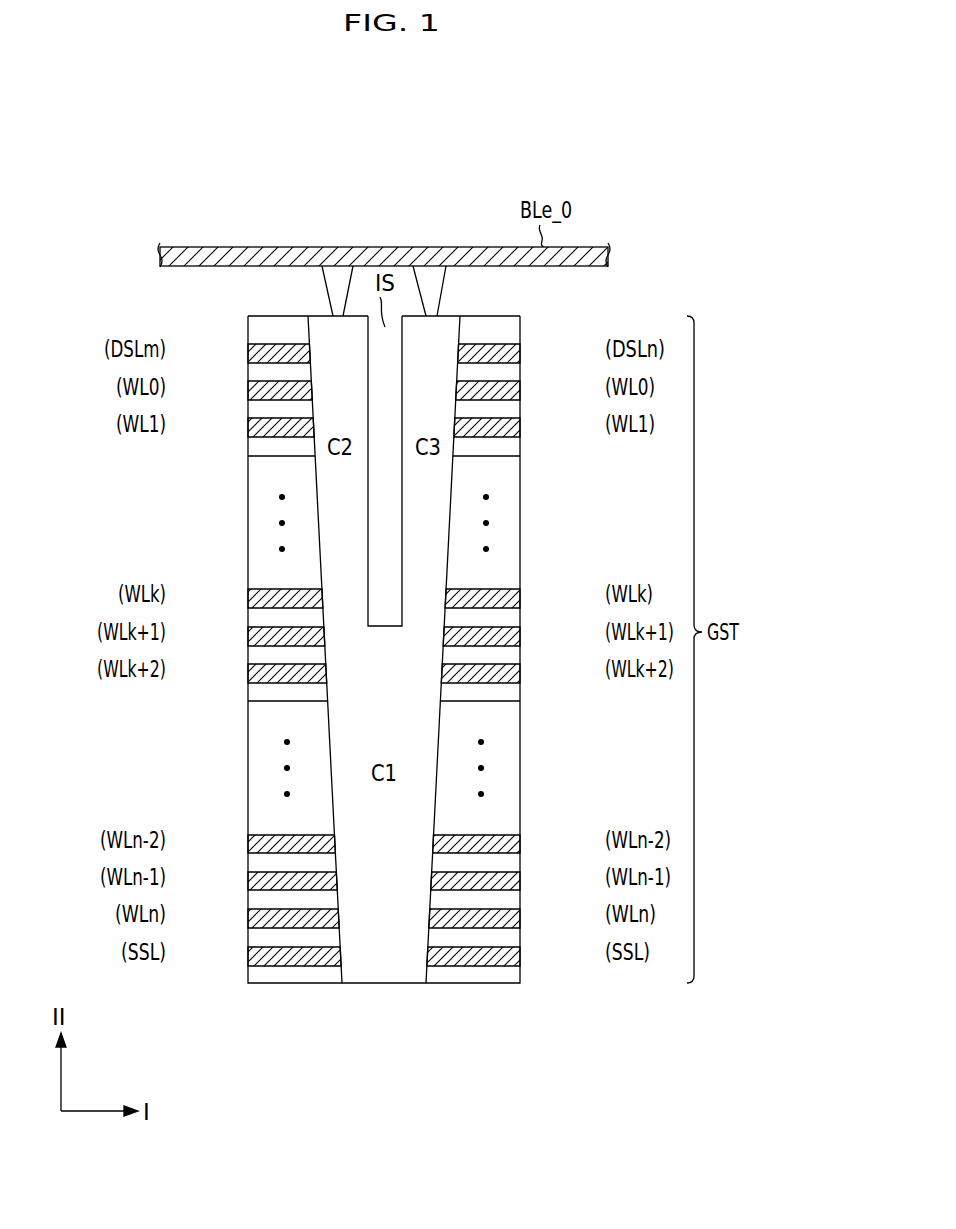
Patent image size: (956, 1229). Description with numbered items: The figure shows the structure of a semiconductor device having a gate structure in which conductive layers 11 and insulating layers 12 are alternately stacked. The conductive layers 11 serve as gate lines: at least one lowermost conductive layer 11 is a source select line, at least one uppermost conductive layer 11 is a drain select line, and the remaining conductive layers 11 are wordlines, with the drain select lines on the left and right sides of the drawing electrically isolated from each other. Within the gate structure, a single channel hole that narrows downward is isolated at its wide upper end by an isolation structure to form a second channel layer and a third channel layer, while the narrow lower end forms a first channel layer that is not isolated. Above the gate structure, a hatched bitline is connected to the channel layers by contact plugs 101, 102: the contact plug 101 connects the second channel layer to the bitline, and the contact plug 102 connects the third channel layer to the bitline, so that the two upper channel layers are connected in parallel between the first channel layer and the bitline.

The conductive layer 11 is at (258, 358).
The insulating layer 12 is at (258, 375).
The contact plug 101 is at (327, 291).
The contact plug 102 is at (443, 290).